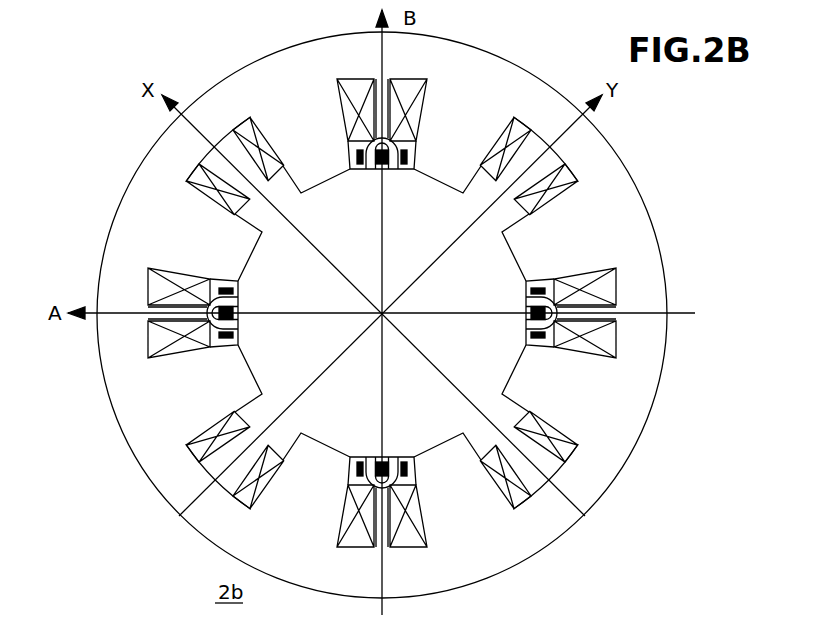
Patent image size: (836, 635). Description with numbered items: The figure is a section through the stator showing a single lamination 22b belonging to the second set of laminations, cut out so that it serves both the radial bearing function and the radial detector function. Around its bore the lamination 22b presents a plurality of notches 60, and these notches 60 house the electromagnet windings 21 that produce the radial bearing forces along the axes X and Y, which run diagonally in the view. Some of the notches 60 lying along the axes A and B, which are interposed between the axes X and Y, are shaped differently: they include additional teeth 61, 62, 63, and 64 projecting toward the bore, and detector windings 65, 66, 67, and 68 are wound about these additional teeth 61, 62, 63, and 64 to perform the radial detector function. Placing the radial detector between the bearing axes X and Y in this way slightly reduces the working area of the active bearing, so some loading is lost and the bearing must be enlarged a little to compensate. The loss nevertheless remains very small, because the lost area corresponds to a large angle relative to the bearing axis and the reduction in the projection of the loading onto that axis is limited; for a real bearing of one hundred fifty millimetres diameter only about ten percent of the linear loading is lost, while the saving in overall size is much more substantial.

The electromagnet windings 21 is at (349, 130).
The lamination 22b is at (610, 210).
The notches 60 is at (478, 199).
The additional tooth 61 is at (393, 170).
The additional tooth 62 is at (393, 462).
The additional tooth 63 is at (525, 299).
The additional tooth 64 is at (238, 332).
The detector winding 65 is at (360, 173).
The detector winding 66 is at (359, 462).
The detector winding 67 is at (528, 288).
The detector winding 68 is at (235, 289).